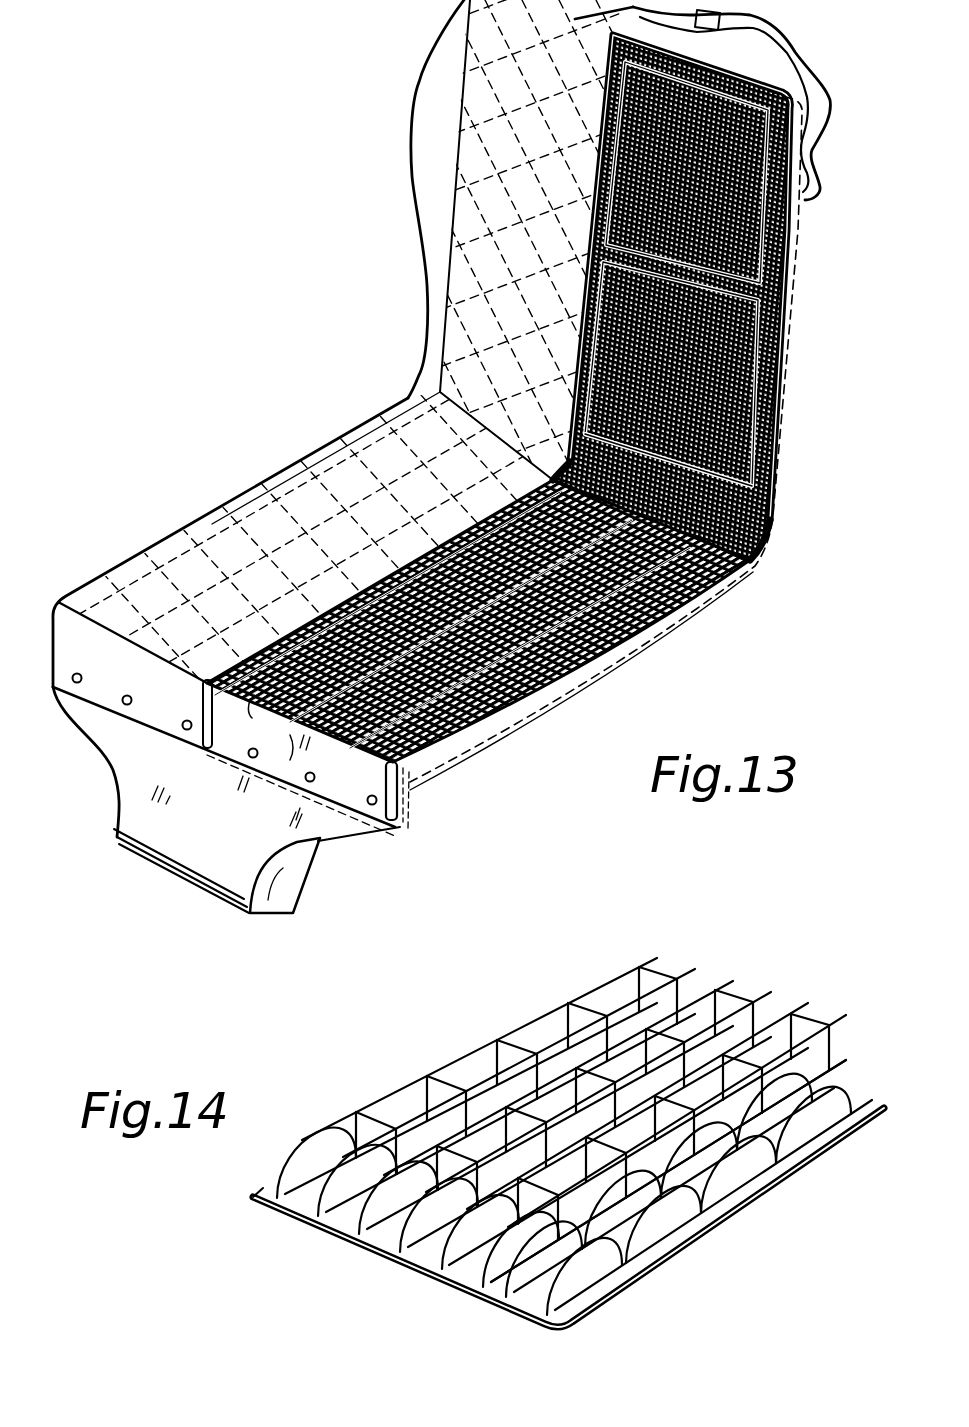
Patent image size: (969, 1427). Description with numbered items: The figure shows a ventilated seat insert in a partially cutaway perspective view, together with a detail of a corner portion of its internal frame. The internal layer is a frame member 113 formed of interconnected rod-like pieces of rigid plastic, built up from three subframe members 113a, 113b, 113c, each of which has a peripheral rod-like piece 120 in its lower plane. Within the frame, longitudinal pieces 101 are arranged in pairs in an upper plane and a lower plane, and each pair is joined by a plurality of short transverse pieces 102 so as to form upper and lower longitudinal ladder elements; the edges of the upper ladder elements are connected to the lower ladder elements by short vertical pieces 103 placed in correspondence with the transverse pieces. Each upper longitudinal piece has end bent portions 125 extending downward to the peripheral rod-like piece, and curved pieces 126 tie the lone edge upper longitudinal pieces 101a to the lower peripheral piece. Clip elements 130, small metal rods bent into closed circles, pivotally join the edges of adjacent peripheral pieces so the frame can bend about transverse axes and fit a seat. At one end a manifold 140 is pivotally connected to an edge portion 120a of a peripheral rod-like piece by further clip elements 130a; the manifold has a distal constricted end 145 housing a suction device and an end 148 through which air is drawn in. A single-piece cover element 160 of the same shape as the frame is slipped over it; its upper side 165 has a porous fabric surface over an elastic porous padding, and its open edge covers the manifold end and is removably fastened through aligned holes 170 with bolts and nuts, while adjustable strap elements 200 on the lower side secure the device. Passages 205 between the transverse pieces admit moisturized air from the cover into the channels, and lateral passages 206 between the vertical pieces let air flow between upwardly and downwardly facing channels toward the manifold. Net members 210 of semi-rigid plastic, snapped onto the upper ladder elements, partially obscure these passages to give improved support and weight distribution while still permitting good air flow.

In FIG. 14, the longitudinal pieces 101 is at (650, 960).
In FIG. 14, the lone edge upper longitudinal pieces 101a is at (823, 1033).
In FIG. 14, the short transverse pieces 102 is at (550, 1003).
In FIG. 14, the short vertical pieces 103 is at (447, 1053).
In FIG. 13, the frame member 113 is at (697, 620).
In FIG. 14, the frame member 113 is at (546, 1118).
In FIG. 13, the subframe member 113a is at (755, 343).
In FIG. 13, the subframe member 113b is at (765, 518).
In FIG. 13, the subframe member 113c is at (553, 683).
In FIG. 13, the peripheral rod-like piece 120 is at (790, 292).
In FIG. 14, the peripheral rod-like piece 120 is at (797, 1150).
In FIG. 13, the edge portion of peripheral rod-like piece 120a is at (327, 750).
In FIG. 14, the edge portion of peripheral rod-like piece 120a is at (263, 1210).
In FIG. 14, the end bent portions 125 is at (277, 1173).
In FIG. 14, the curved pieces 126 is at (837, 1073).
In FIG. 13, the clip elements 130 is at (748, 452).
In FIG. 13, the further clip elements 130a is at (360, 766).
In FIG. 13, the manifold 140 is at (100, 773).
In FIG. 13, the distal constricted end 145 is at (272, 885).
In FIG. 13, the end of the manifold 148 is at (400, 828).
In FIG. 13, the cover element 160 is at (288, 461).
In FIG. 13, the upper side 165 is at (168, 572).
In FIG. 13, the aligned holes 170 is at (307, 780).
In FIG. 13, the adjustable strap elements 200 is at (787, 48).
In FIG. 14, the passages 205 is at (567, 983).
In FIG. 14, the lateral passages 206 is at (603, 1020).
In FIG. 13, the net members 210 is at (748, 232).